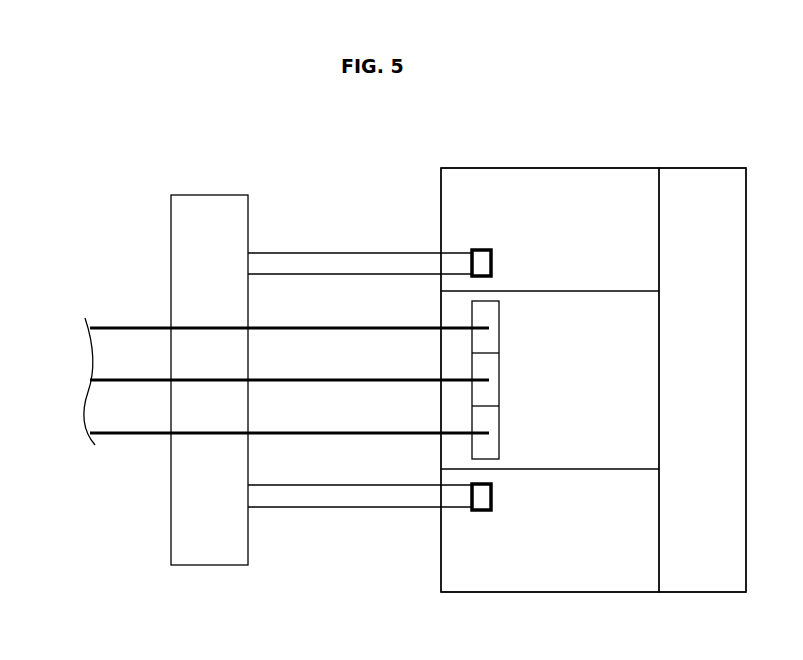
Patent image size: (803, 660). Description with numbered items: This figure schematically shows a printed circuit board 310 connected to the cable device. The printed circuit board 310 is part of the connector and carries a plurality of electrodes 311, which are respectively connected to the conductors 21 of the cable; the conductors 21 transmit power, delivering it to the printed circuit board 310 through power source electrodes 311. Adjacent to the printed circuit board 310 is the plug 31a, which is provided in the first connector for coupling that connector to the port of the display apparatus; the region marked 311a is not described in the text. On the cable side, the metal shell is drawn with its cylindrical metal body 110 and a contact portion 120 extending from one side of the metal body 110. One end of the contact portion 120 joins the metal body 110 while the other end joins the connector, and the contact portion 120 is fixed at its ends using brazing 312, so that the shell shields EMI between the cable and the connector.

The conductor 21 is at (65, 326).
The metal body 110 is at (211, 203).
The contact portion 120 is at (337, 258).
The printed circuit board 310 is at (584, 383).
The electrode 311 is at (472, 342).
The housing front portion 311a is at (581, 180).
The plug 31a is at (706, 180).
The brazing 312 is at (494, 258).